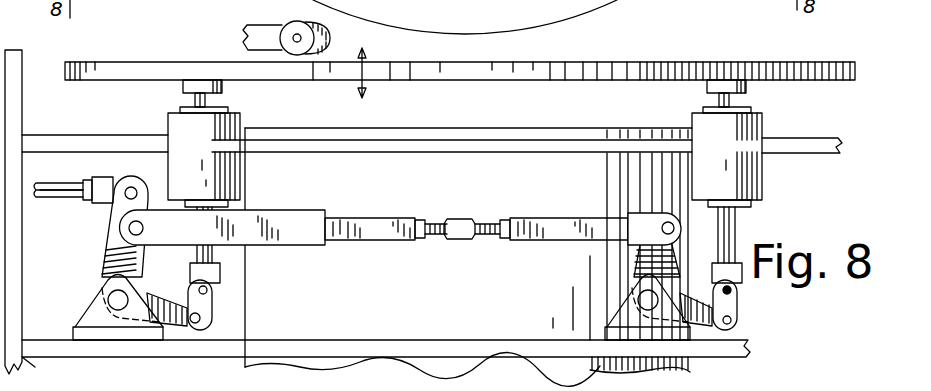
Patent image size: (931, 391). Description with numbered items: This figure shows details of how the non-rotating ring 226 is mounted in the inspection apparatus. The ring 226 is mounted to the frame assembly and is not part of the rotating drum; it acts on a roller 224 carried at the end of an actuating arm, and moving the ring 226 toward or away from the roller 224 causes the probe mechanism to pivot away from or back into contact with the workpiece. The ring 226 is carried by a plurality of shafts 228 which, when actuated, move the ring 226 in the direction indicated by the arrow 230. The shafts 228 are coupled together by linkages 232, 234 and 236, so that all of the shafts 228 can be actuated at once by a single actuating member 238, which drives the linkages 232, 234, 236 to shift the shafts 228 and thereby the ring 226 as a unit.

The roller 224 is at (293, 23).
The non-rotating ring 226 is at (650, 73).
The shafts 228 is at (215, 98).
The arrow 230 is at (366, 64).
The linkage 232 is at (207, 300).
The linkage 234 is at (178, 326).
The linkage 236 is at (366, 218).
The actuating member 238 is at (56, 190).